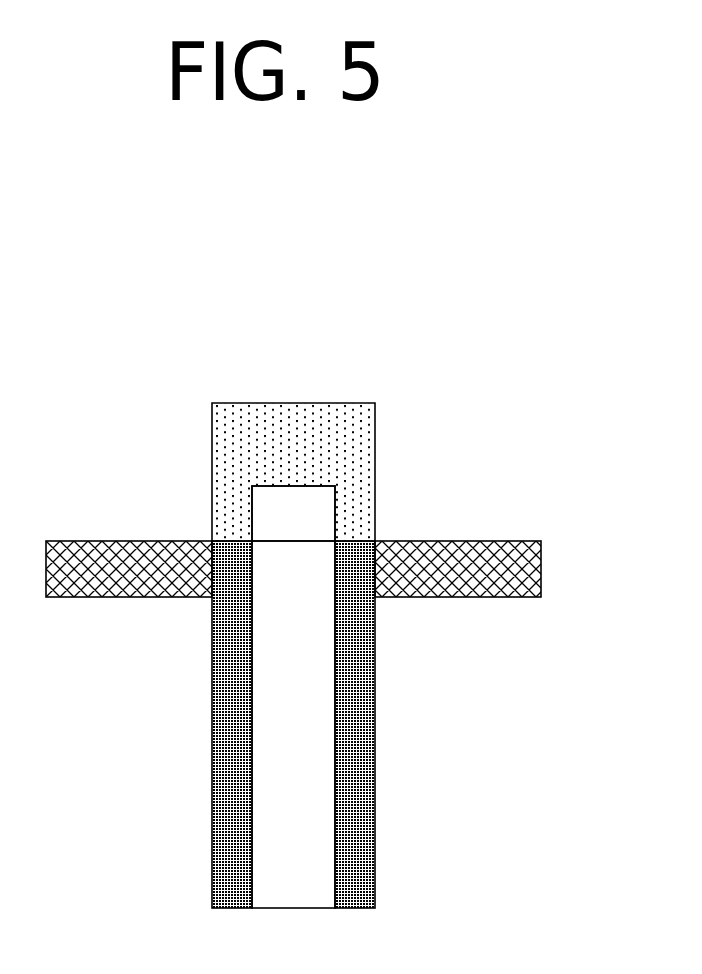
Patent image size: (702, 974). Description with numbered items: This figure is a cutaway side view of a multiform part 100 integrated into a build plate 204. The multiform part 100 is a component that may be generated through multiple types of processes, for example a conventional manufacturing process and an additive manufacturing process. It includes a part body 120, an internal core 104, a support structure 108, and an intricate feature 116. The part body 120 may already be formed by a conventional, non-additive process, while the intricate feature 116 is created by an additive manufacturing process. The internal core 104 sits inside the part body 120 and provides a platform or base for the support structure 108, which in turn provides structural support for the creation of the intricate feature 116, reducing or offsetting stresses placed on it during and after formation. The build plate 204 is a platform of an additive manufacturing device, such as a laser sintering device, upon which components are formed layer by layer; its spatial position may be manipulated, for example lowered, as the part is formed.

The multiform part 100 is at (177, 407).
The internal core 104 is at (312, 575).
The support structure 108 is at (312, 518).
The intricate feature 116 is at (333, 403).
The part body 120 is at (212, 712).
The build plate 204 is at (114, 541).